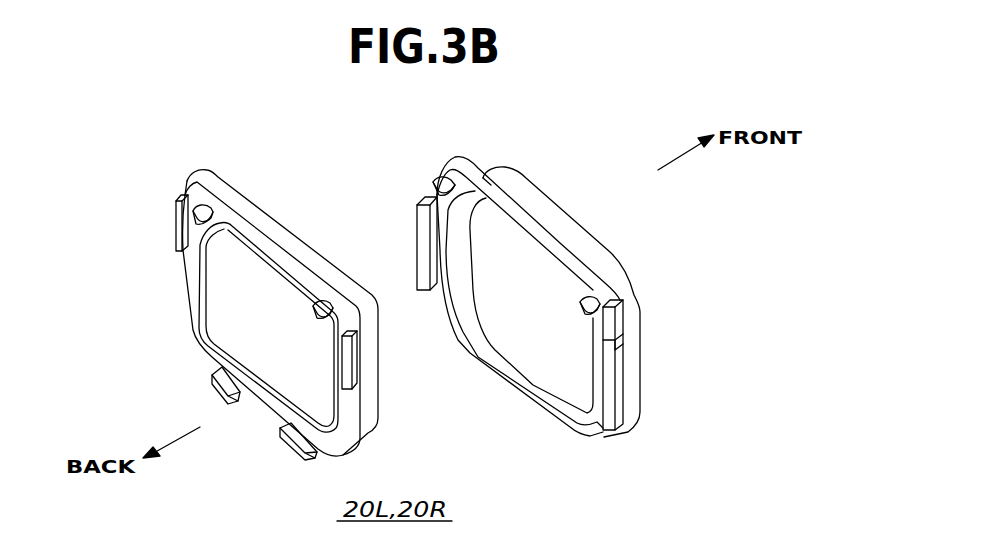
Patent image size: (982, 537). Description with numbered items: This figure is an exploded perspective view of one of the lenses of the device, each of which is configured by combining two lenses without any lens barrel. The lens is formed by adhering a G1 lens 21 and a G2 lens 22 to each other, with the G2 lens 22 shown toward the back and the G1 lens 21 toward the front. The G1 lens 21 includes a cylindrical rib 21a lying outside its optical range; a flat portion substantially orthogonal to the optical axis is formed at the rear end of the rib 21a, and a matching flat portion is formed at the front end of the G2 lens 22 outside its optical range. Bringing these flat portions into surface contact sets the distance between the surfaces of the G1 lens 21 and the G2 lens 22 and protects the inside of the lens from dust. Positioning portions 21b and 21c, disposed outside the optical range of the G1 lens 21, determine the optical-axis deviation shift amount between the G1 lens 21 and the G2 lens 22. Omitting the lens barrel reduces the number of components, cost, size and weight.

The G1 lens 21 is at (523, 172).
The cylindrical rib 21a is at (553, 237).
The positioning portion 21b is at (440, 182).
The positioning portion 21c is at (417, 228).
The G2 lens 22 is at (195, 311).